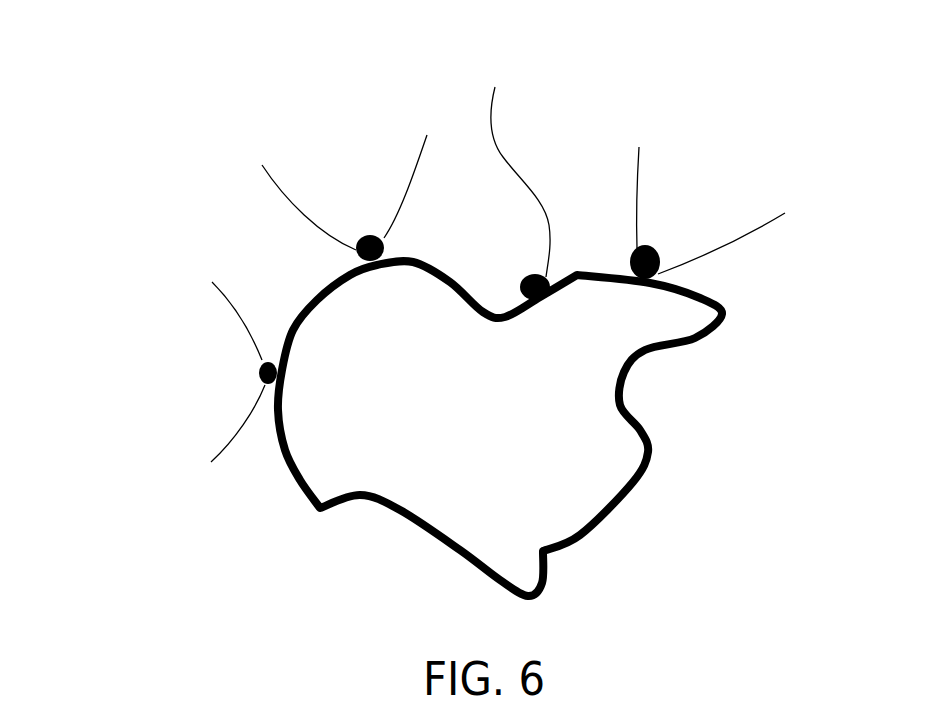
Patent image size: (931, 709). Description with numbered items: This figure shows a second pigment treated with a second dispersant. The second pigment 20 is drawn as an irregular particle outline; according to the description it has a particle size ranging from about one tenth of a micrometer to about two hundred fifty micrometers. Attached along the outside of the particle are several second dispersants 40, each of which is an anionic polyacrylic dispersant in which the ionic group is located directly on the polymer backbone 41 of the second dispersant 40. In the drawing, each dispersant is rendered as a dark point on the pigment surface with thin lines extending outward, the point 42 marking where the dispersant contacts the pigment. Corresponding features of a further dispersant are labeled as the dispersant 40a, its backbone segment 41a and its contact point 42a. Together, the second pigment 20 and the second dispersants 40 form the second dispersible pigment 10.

The second dispersible pigment 10 is at (436, 317).
The second pigment 20 is at (398, 511).
The second dispersant 40 is at (148, 374).
The polymer backbone 41 is at (216, 444).
The point 42 is at (256, 375).
The light path 40a is at (534, 158).
The light path segment 41a is at (490, 134).
The point 42a is at (558, 268).